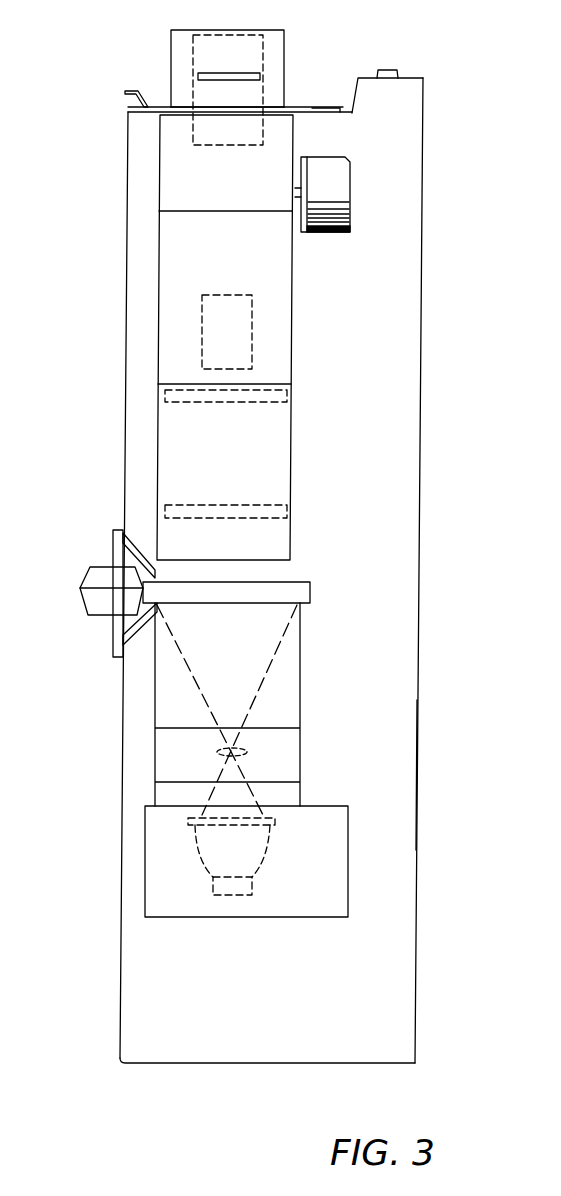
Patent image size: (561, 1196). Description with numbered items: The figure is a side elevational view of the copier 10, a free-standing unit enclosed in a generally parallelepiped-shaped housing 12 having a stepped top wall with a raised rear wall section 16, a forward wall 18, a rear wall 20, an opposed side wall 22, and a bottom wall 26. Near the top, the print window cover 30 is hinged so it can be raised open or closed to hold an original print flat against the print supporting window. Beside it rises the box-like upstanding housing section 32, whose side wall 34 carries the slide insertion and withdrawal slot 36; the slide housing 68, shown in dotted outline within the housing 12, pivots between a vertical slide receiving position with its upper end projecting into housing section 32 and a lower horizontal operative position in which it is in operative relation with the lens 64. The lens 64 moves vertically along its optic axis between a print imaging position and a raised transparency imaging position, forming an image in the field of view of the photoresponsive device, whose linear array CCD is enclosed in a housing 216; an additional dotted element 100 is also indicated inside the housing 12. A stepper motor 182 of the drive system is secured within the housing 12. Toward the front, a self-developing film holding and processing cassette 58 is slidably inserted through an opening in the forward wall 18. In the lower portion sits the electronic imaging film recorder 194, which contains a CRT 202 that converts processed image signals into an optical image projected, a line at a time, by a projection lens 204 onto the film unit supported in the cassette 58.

The copier 10 is at (478, 67).
The housing 12 is at (424, 80).
The raised rear wall section 16 is at (413, 77).
The forward wall 18 is at (123, 722).
The rear wall 20 is at (418, 613).
The side wall 22 is at (400, 765).
The bottom wall 26 is at (197, 1065).
The print window cover 30 is at (156, 100).
The housing section 32 is at (284, 30).
The side wall 34 is at (273, 80).
The slide insertion and withdrawal slot 36 is at (253, 72).
The self-developing film holding and processing cassette 58 is at (88, 578).
The lens 64 is at (228, 270).
The slide housing 68 is at (218, 50).
The upper roller assembly 100 is at (292, 405).
The stepper motor 182 is at (343, 178).
The electronic imaging film recorder 194 is at (337, 812).
The CRT 202 is at (260, 852).
The projection lens 204 is at (247, 752).
The housing 216 is at (287, 512).